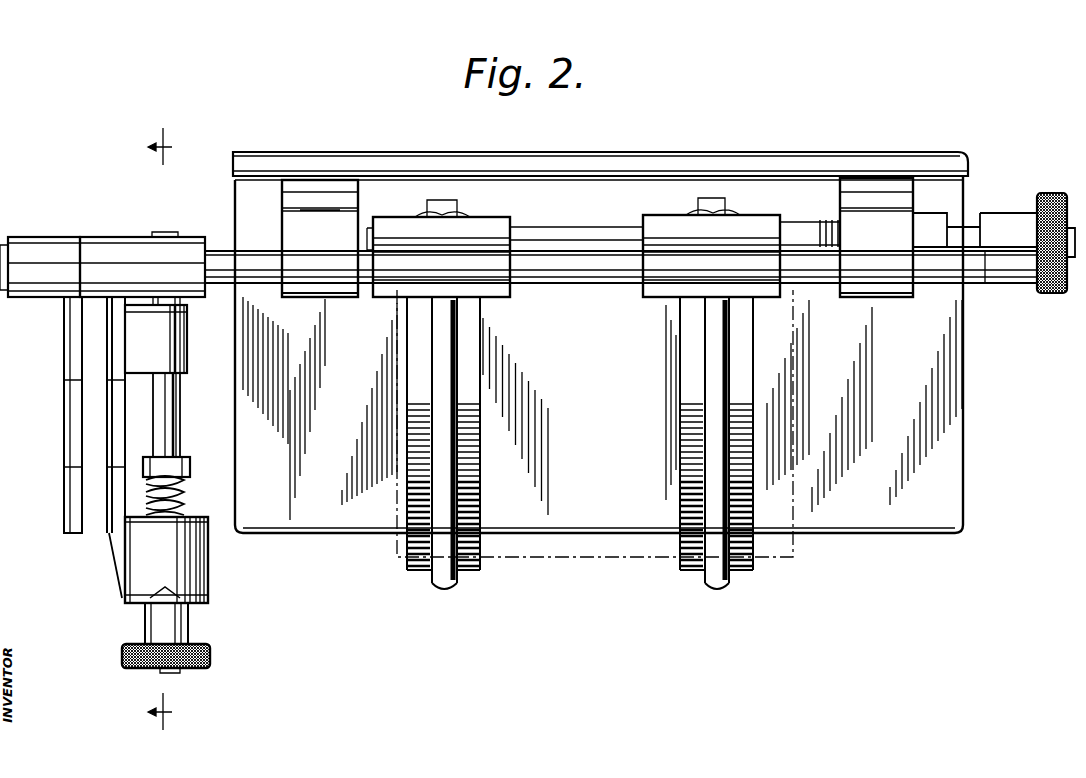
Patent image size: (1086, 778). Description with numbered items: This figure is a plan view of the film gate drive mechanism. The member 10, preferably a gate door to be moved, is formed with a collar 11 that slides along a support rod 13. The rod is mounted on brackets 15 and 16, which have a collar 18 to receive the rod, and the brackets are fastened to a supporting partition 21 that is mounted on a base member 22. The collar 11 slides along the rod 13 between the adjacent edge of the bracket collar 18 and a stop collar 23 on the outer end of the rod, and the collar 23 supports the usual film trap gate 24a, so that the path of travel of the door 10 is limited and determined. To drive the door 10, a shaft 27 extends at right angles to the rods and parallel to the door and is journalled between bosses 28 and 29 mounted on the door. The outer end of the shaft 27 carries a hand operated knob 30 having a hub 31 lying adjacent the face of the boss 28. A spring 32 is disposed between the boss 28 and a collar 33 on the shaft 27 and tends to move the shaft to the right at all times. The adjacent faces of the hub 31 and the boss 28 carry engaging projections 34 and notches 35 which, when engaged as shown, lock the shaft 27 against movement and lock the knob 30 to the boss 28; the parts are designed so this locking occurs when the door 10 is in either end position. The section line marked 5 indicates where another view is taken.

The section line 5- 5 is at (146, 429).
The member 10 is at (115, 485).
The collar 11 is at (128, 248).
The rod 13 is at (229, 286).
The bracket 15 is at (292, 198).
The bracket 16 is at (853, 198).
The collar 18 is at (328, 292).
The supporting partition 21 is at (558, 152).
The base member 22 is at (599, 366).
The collar 23 is at (36, 247).
The film trap gate 24a is at (64, 362).
The shaft 27 is at (180, 418).
The boss 28 is at (185, 567).
The boss 29 is at (187, 344).
The knob 30 is at (210, 655).
The hub 31 is at (190, 601).
The spring 32 is at (186, 497).
The collar 33 is at (190, 465).
The projection 34 is at (150, 600).
The notch 35 is at (167, 590).